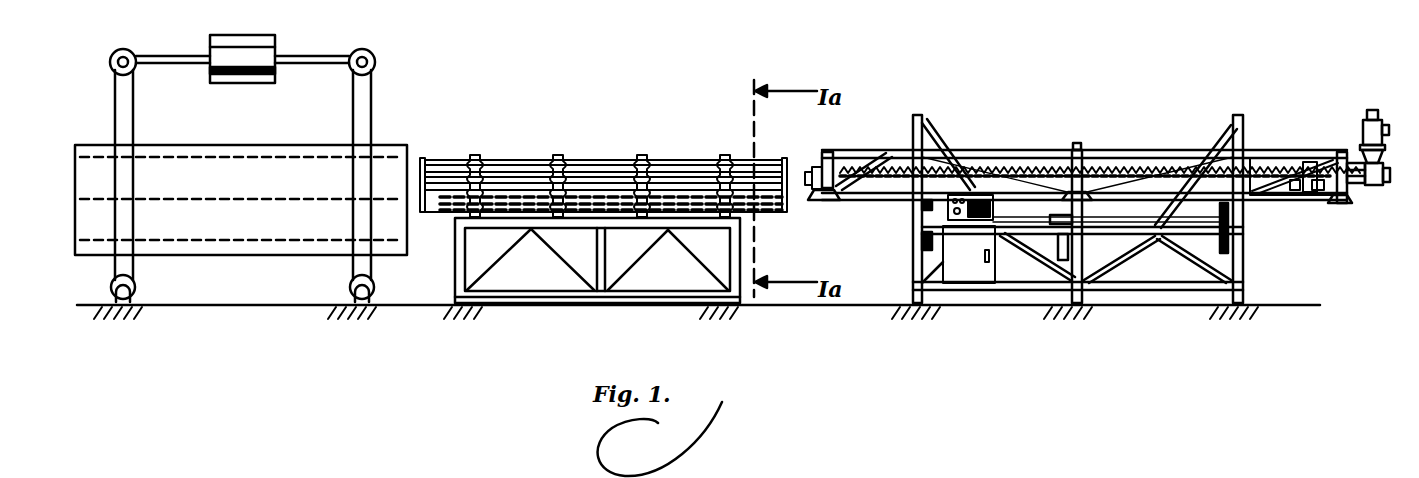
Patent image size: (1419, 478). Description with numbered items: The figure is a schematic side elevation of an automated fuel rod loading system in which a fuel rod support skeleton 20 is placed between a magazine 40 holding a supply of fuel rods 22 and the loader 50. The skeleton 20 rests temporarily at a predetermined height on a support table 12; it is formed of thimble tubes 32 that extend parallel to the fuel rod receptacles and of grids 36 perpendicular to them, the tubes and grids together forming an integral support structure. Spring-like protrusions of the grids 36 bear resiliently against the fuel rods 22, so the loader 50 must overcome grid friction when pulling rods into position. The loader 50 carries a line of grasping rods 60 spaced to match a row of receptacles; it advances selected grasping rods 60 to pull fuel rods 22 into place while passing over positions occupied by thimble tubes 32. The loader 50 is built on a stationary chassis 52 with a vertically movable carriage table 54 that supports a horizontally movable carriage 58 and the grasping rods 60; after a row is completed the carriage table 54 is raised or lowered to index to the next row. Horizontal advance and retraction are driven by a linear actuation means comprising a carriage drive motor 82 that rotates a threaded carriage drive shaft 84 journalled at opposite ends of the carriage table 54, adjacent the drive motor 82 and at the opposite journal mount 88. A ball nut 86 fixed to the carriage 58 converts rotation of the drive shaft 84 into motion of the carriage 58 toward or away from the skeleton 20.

The support table 12 is at (640, 224).
The fuel rod support skeleton 20 is at (615, 182).
The fuel rods 22 is at (760, 212).
The thimble tubes 32 is at (493, 170).
The grids 36 is at (475, 157).
The magazine 40 is at (387, 150).
The loader 50 is at (1102, 211).
The chassis 52 is at (1140, 283).
The carriage table 54 is at (853, 155).
The carriage 58 is at (1298, 193).
The grasping rods 60 is at (1002, 193).
The carriage drive motor 82 is at (1373, 108).
The carriage drive shaft 84 is at (1118, 165).
The ball nut 86 is at (1288, 167).
The journal mount 88 is at (812, 172).